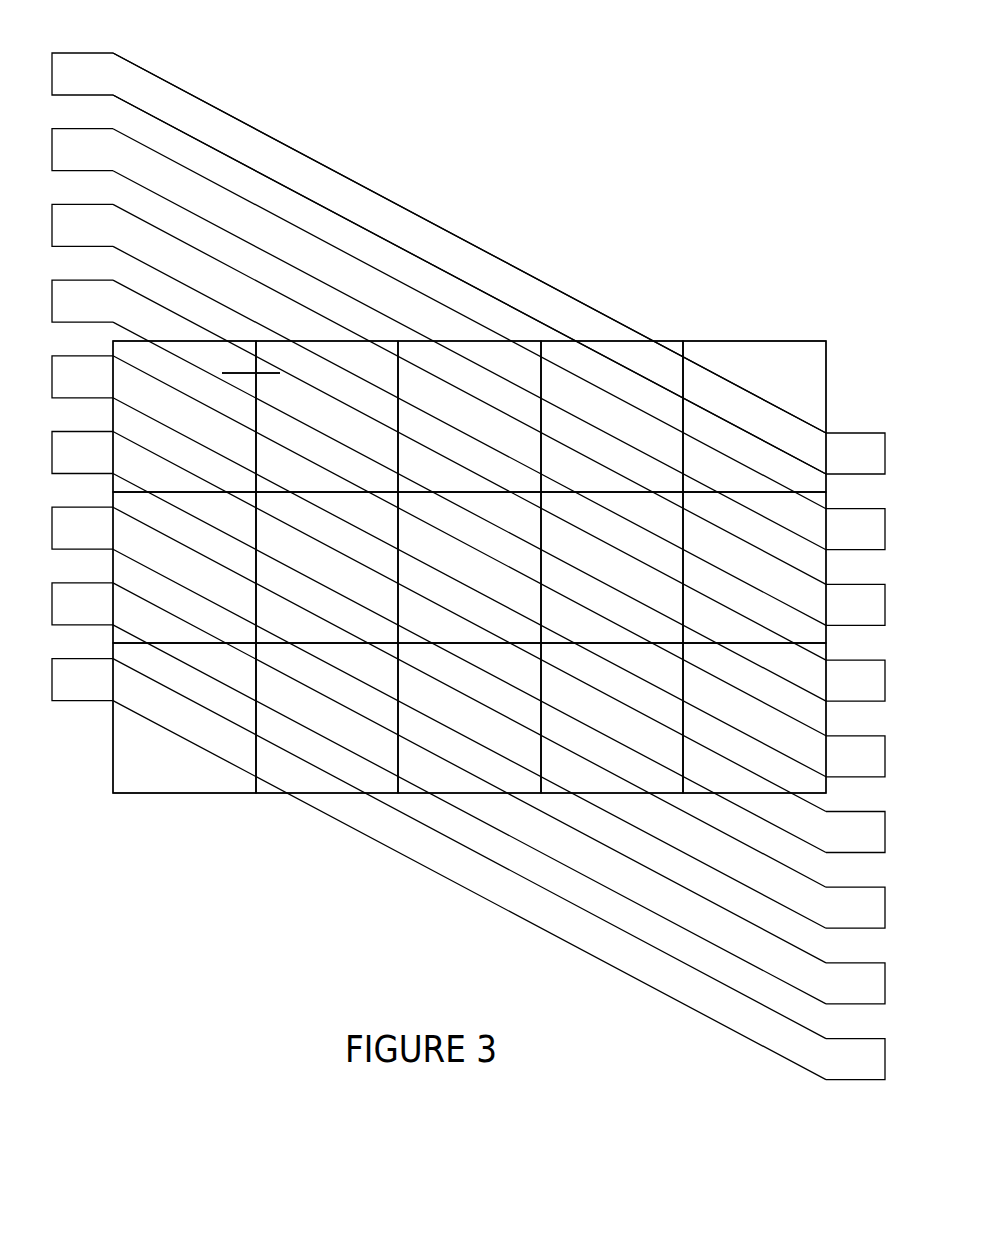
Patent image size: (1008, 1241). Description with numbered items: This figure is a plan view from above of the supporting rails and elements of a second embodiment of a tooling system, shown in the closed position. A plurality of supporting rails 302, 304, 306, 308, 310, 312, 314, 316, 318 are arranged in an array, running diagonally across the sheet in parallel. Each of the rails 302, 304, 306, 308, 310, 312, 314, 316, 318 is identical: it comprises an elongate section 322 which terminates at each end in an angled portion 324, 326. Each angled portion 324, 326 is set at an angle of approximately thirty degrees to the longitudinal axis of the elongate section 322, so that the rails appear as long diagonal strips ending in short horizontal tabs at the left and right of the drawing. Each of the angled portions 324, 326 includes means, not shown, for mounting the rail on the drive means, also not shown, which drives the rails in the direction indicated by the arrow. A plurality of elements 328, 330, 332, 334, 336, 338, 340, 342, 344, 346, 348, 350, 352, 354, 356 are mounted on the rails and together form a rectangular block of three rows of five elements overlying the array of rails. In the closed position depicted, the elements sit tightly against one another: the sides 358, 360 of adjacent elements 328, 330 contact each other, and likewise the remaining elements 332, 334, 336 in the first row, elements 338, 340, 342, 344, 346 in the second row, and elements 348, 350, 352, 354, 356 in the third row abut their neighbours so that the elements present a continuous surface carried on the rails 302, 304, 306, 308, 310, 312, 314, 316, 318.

The supporting rail 302 is at (542, 297).
The supporting rail 304 is at (836, 527).
The supporting rail 306 is at (836, 603).
The supporting rail 308 is at (836, 678).
The supporting rail 310 is at (836, 754).
The supporting rail 312 is at (836, 830).
The supporting rail 314 is at (836, 906).
The supporting rail 316 is at (836, 981).
The supporting rail 318 is at (836, 1057).
The elongate section 322 is at (338, 195).
The angled portion 324 is at (73, 68).
The angled portion 326 is at (862, 450).
The element 328 is at (164, 433).
The element 330 is at (307, 433).
The element 332 is at (450, 433).
The element 334 is at (592, 433).
The element 336 is at (734, 433).
The element 338 is at (164, 584).
The element 340 is at (307, 584).
The element 342 is at (450, 584).
The element 344 is at (592, 584).
The element 346 is at (734, 584).
The element 348 is at (164, 735).
The element 350 is at (307, 735).
The element 352 is at (450, 735).
The element 354 is at (592, 735).
The element 356 is at (734, 735).
The side 358 is at (225, 370).
The side 360 is at (257, 373).